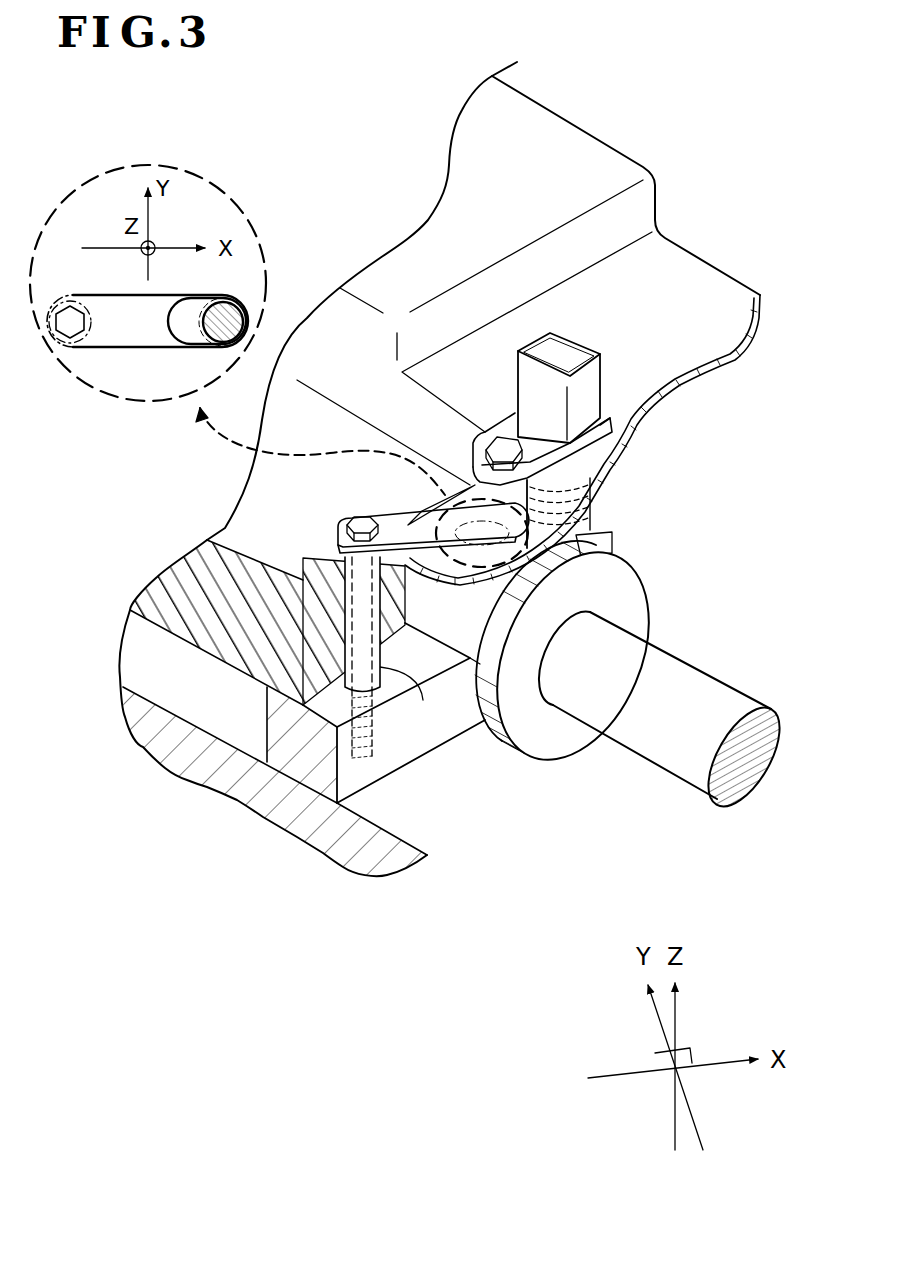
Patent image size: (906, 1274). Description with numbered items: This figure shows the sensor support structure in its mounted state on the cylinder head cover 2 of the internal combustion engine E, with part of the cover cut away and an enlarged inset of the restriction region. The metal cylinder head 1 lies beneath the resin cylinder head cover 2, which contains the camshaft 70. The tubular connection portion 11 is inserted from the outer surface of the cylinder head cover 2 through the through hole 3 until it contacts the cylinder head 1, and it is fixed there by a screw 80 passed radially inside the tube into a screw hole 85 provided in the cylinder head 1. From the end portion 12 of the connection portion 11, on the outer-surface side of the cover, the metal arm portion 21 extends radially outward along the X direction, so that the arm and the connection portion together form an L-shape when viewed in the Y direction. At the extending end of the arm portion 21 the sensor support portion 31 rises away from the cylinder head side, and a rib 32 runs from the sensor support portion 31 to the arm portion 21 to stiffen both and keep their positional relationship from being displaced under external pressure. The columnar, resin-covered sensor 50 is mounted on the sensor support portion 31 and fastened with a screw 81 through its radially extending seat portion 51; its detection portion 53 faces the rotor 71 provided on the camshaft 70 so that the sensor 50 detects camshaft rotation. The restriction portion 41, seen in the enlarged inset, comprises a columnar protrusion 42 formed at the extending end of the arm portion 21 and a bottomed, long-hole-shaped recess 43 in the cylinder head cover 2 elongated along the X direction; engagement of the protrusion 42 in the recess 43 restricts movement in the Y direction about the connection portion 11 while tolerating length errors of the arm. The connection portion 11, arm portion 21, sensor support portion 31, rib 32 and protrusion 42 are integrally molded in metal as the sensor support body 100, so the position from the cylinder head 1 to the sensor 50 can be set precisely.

The cylinder head 1 is at (440, 740).
The cylinder head cover 2 is at (706, 285).
The through hole 3 is at (382, 622).
The connection portion 11 is at (385, 667).
The end portion 12 is at (345, 530).
The arm portion 21 is at (415, 550).
The sensor support portion 31 is at (583, 508).
The rib 32 is at (435, 503).
The restriction portion 41 is at (193, 305).
The protrusion 42 is at (240, 307).
The recess 43 is at (188, 336).
The sensor 50 is at (606, 371).
The seat portion 51 is at (513, 420).
The detection portion 53 is at (595, 537).
The camshaft 70 is at (708, 688).
The rotor 71 is at (617, 583).
The screw 80 is at (363, 517).
The screw 81 is at (497, 445).
The screw hole 85 is at (365, 754).
The sensor support body 100 is at (382, 512).
The internal combustion engine E is at (726, 177).